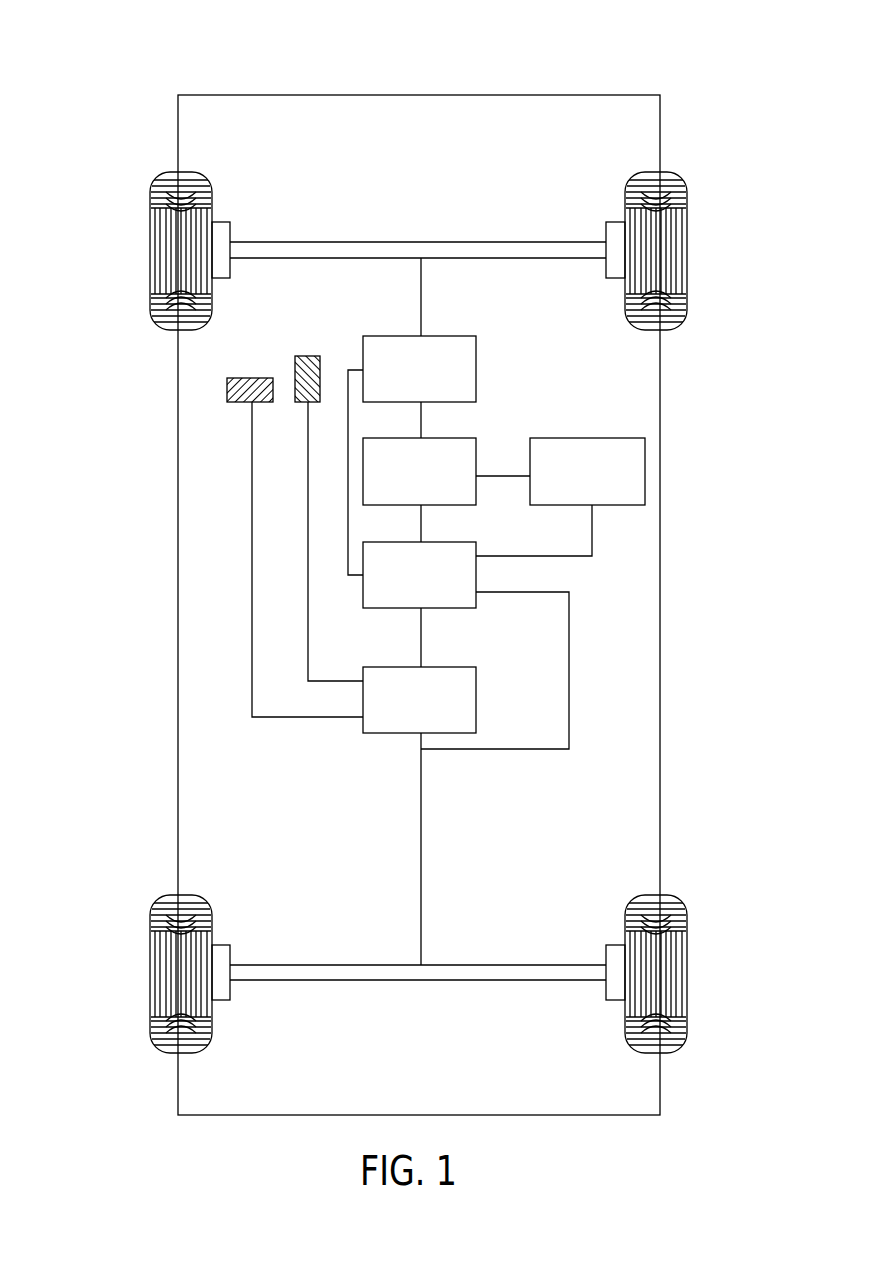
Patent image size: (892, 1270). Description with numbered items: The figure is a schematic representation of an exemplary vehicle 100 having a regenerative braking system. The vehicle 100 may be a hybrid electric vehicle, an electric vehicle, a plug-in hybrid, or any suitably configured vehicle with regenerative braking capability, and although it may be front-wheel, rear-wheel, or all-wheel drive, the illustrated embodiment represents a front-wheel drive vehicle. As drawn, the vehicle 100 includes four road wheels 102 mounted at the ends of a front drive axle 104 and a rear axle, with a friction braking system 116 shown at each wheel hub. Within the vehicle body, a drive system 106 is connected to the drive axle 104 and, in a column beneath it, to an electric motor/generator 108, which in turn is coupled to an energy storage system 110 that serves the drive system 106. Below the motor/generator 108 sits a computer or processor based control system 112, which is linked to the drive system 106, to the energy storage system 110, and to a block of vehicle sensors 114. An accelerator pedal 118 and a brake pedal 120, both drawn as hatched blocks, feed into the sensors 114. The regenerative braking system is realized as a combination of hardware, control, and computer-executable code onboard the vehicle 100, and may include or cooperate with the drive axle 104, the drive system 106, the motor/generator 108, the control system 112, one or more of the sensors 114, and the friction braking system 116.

The vehicle 100 is at (174, 76).
The road wheels 102 is at (150, 241).
The drive axle 104 is at (377, 242).
The drive system 106 is at (445, 336).
The electric motor/generator 108 is at (467, 438).
The energy storage system 110 is at (591, 438).
The control system 112 is at (471, 542).
The vehicle sensors 114 is at (470, 667).
The friction braking system 116 is at (218, 222).
The accelerator pedal 118 is at (307, 356).
The brake pedal 120 is at (243, 378).